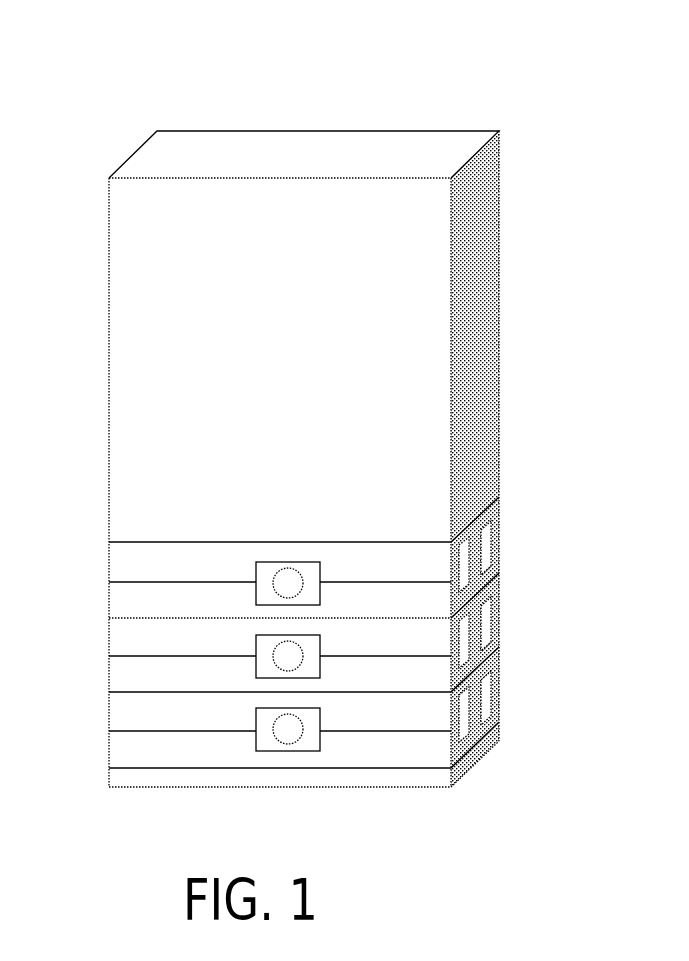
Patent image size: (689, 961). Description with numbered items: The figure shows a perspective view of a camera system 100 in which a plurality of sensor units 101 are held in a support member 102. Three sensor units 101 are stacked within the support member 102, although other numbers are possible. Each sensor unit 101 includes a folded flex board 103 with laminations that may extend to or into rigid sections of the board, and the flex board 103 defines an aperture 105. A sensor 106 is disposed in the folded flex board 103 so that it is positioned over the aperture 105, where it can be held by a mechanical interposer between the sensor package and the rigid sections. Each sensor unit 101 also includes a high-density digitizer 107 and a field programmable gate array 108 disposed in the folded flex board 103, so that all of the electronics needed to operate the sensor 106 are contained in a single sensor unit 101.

The camera system 100 is at (94, 150).
The sensor unit 101 is at (488, 505).
The support member 102 is at (487, 392).
The flex board 103 is at (365, 750).
The aperture 105 is at (265, 590).
The sensor 106 is at (276, 572).
The high-density digitizer 107 is at (465, 739).
The field programmable gate array 108 is at (483, 720).